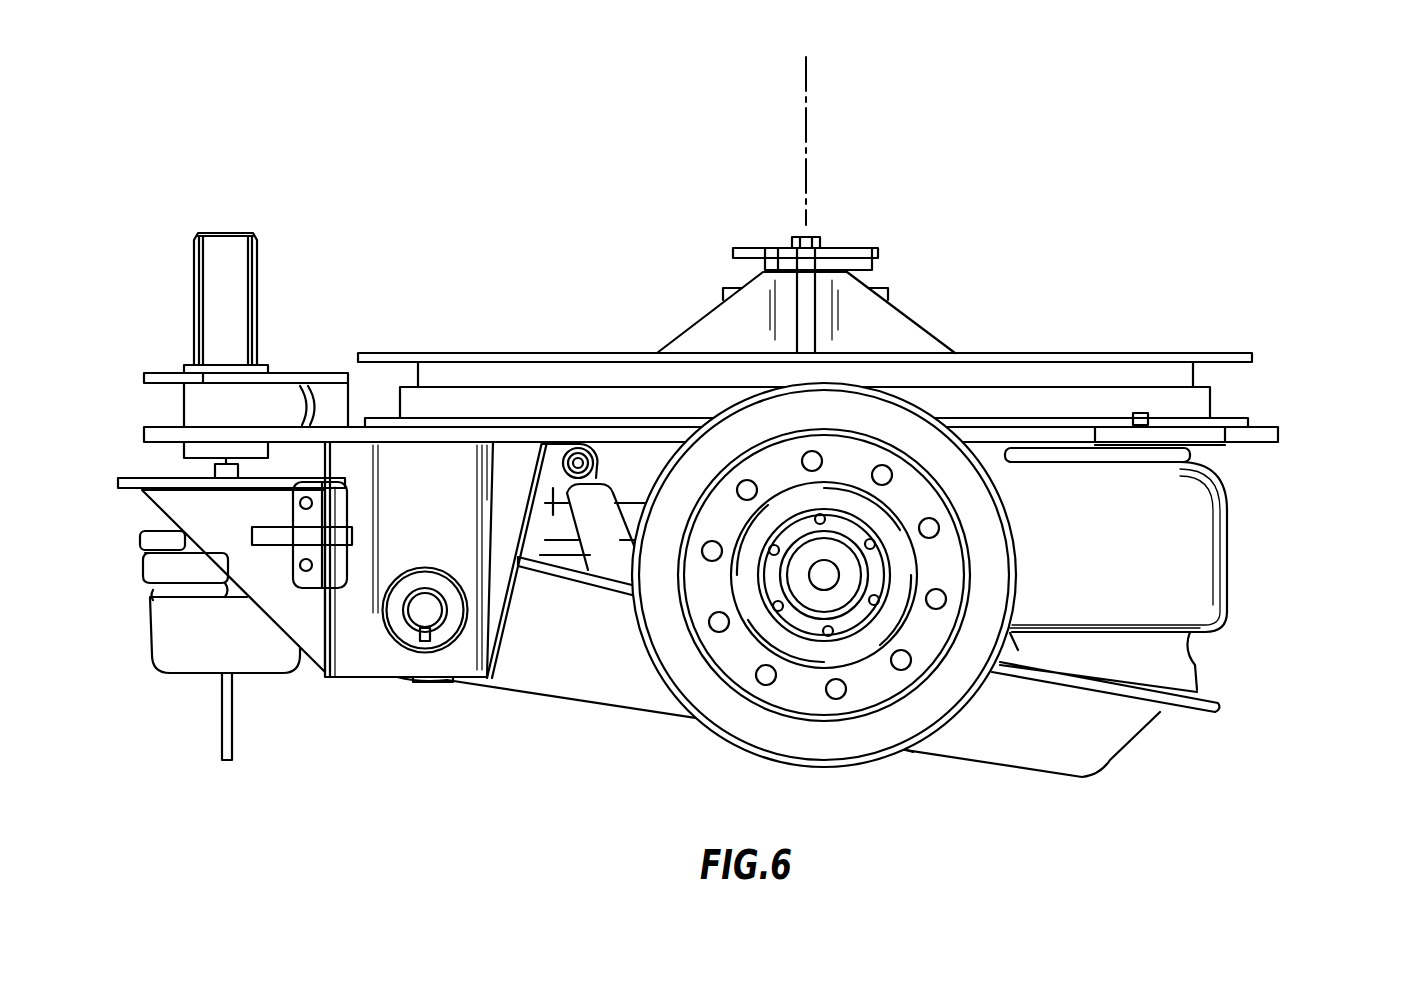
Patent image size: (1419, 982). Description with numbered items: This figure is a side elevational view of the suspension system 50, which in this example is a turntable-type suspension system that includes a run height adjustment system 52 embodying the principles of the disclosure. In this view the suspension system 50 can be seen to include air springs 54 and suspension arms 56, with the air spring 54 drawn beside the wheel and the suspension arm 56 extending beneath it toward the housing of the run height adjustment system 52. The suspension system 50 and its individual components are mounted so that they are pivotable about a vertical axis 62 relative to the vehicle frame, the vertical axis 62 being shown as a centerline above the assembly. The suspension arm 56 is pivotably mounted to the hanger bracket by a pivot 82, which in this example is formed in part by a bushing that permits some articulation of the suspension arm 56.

The suspension system 50 is at (765, 417).
The run height adjustment system 52 is at (351, 518).
The air springs 54 is at (1228, 553).
The suspension arms 56 is at (587, 702).
The vertical axis 62 is at (806, 128).
The pivot 82 is at (410, 626).